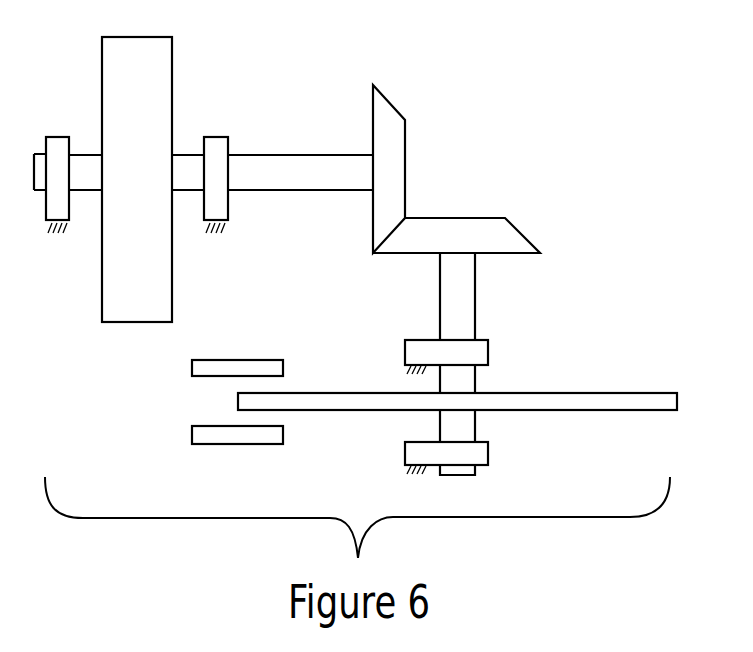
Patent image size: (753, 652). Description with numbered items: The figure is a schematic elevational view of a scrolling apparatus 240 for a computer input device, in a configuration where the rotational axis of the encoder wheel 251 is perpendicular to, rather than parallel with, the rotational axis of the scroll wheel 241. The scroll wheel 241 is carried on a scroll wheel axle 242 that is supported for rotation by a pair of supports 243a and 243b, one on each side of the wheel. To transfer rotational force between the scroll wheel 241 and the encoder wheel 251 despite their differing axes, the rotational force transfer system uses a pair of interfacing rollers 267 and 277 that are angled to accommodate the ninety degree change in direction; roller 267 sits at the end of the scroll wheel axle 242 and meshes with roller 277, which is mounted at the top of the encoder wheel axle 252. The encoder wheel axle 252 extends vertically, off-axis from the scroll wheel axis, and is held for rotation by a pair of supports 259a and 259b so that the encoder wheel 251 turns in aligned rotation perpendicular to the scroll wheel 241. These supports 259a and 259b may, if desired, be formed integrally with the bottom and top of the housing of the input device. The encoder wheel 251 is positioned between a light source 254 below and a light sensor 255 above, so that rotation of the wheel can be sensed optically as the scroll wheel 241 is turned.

The scrolling apparatus 240 is at (485, 91).
The scroll wheel 241 is at (159, 63).
The scroll wheel axle 242 is at (288, 180).
The support 243a is at (58, 145).
The support 243b is at (217, 145).
The interfacing roller 267 is at (391, 159).
The interfacing roller 277 is at (513, 242).
The encoder wheel axle 252 is at (467, 295).
The support 259a is at (477, 357).
The support 259b is at (480, 453).
The encoder wheel 251 is at (585, 400).
The light sensor 255 is at (240, 365).
The light source 254 is at (243, 437).